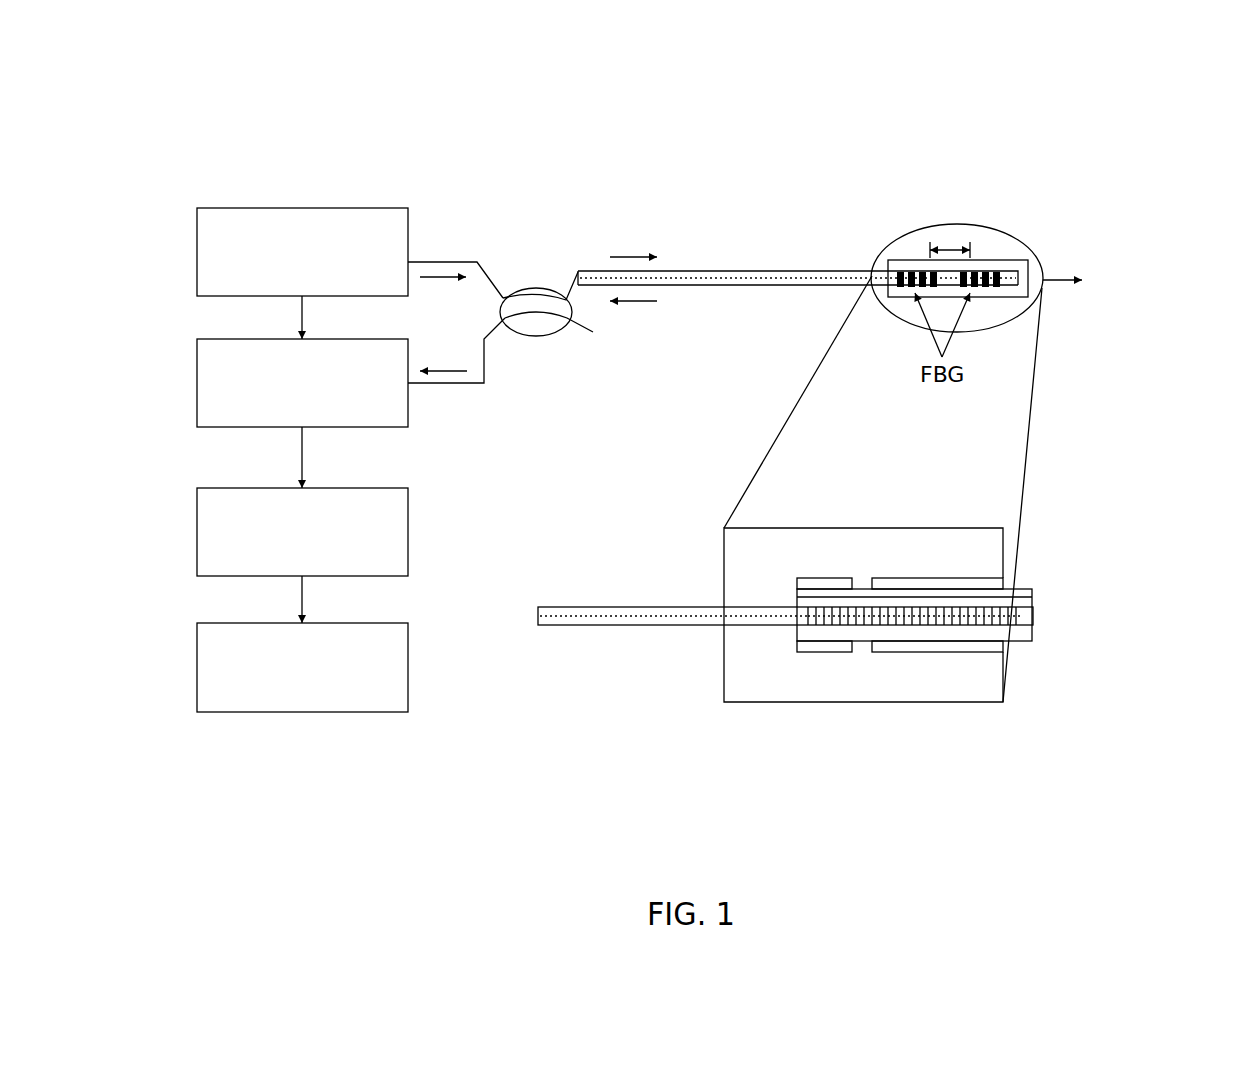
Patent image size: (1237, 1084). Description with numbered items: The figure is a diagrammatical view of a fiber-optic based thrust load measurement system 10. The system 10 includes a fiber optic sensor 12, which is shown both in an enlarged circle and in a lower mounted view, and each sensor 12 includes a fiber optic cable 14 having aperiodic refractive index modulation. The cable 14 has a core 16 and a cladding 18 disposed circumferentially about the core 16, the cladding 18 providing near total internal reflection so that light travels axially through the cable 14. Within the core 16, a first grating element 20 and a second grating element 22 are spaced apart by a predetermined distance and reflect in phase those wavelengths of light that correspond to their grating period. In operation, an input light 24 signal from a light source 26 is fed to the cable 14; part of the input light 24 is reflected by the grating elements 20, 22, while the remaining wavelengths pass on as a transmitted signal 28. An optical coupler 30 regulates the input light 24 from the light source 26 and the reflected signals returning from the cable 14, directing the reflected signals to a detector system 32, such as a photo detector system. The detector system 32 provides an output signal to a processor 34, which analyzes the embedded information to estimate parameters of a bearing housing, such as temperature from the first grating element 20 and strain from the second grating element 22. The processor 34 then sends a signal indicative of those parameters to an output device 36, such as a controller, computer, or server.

The thrust load measurement system 10 is at (1143, 122).
The fiber optic sensor 12 is at (976, 219).
The fiber optic cable 14 is at (823, 270).
The core 16 is at (847, 287).
The cladding 18 is at (802, 287).
The first grating element 20 is at (892, 297).
The second grating element 22 is at (985, 292).
The input light 24 is at (445, 277).
The light source 26 is at (302, 208).
The transmitted signal 28 is at (1055, 268).
The optical coupler 30 is at (535, 290).
The detector system 32 is at (408, 408).
The processor 34 is at (408, 557).
The output device 36 is at (408, 675).